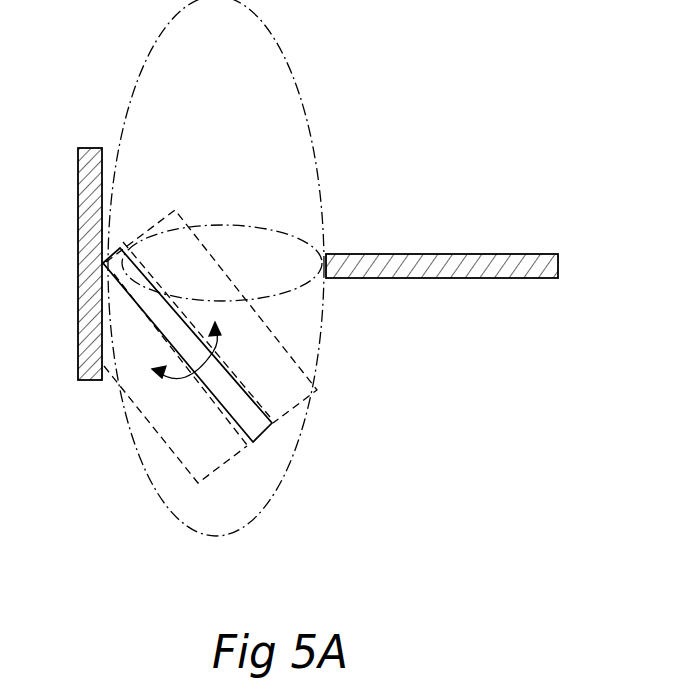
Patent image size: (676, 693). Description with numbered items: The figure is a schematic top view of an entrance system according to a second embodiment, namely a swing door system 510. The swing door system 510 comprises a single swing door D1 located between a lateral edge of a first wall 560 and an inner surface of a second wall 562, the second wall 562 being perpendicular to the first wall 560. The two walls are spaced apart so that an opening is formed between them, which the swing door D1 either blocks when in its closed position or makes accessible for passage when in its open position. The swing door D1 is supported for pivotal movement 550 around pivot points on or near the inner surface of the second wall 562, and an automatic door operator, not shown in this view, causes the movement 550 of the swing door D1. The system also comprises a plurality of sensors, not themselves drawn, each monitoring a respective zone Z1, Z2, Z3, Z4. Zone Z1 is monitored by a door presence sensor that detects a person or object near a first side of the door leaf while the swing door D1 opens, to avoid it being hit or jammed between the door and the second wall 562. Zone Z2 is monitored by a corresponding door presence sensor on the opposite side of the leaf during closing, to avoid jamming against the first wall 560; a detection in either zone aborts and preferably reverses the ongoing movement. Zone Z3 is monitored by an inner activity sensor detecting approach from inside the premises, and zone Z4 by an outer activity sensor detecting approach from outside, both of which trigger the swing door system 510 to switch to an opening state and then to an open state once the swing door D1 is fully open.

The swing door system 510 is at (318, 268).
The pivotal movement 550 is at (213, 346).
The first wall 560 is at (410, 262).
The second wall 562 is at (103, 222).
The swing door D1 is at (263, 436).
The zone Z1 is at (175, 378).
The zone Z2 is at (211, 316).
The zone Z3 is at (229, 518).
The zone Z4 is at (229, 66).